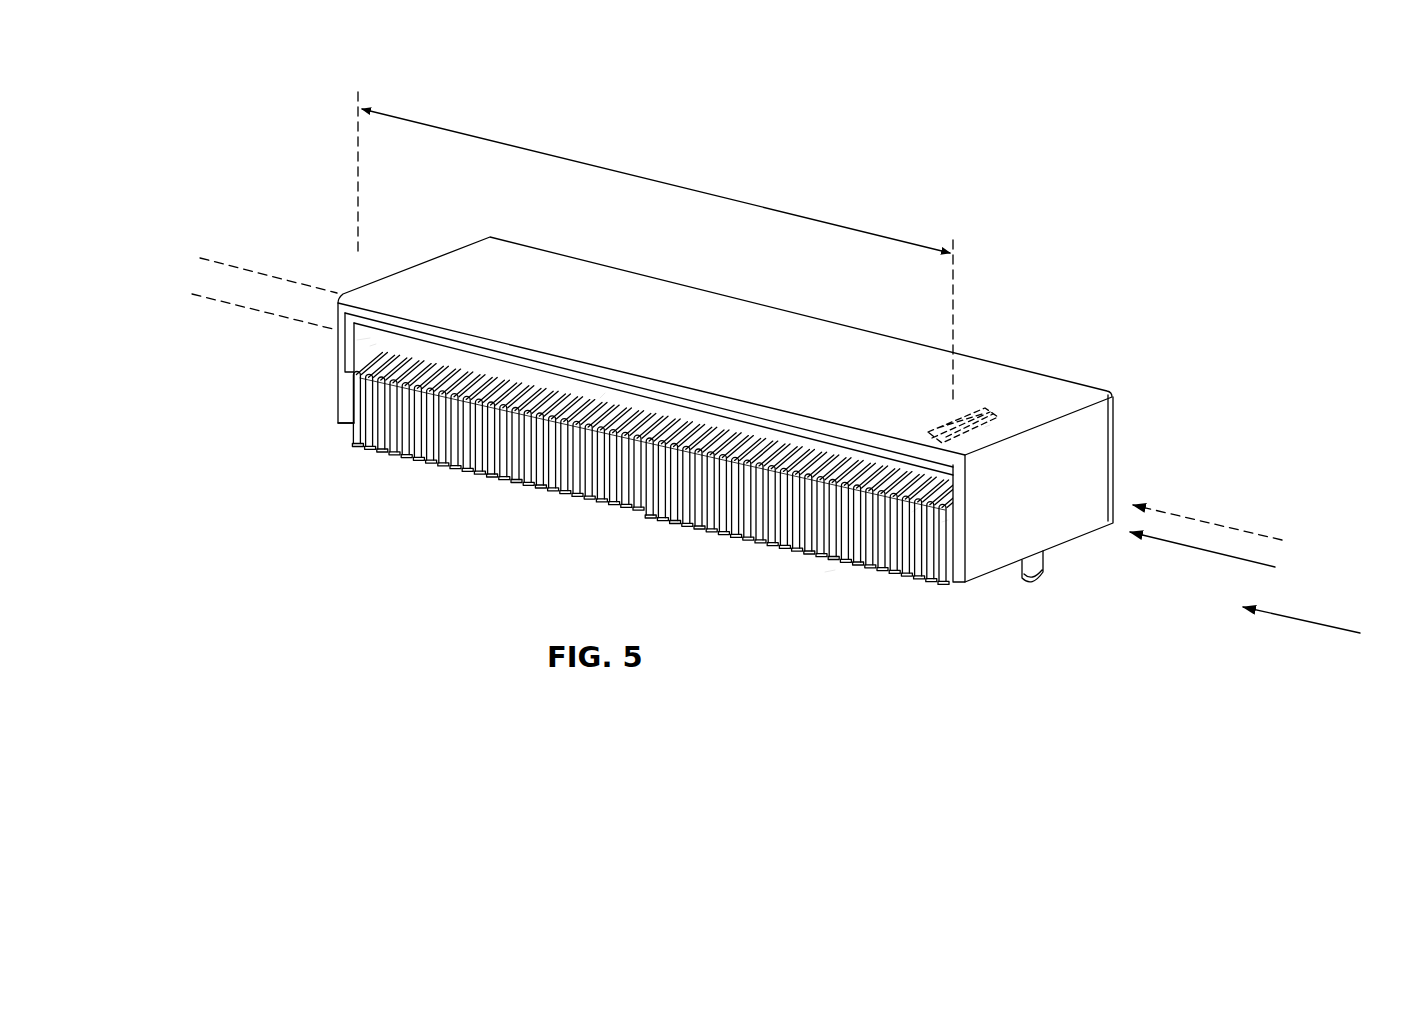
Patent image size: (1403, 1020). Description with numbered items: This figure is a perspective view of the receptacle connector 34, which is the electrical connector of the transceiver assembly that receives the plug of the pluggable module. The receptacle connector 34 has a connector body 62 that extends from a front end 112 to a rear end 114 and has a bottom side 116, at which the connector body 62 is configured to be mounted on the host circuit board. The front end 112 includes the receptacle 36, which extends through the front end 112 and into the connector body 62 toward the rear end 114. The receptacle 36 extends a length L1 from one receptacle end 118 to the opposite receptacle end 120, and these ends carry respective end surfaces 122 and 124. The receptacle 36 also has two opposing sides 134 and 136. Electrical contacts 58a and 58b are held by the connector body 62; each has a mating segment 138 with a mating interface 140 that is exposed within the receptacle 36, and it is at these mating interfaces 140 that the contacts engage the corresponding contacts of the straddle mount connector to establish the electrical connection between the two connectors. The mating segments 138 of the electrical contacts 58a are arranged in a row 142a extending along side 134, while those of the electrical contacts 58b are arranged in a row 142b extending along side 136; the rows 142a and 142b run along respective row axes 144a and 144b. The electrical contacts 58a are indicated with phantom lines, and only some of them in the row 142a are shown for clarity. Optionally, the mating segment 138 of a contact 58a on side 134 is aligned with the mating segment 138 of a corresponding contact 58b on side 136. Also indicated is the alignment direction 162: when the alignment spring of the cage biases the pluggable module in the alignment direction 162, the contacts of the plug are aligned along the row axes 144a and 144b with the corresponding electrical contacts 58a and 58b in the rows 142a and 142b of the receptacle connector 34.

The receptacle connector 34 is at (1082, 122).
The rear end 114 is at (975, 343).
The end 120 is at (320, 313).
The connector body 62 is at (1082, 485).
The bottom side 116 is at (1048, 555).
The side 136 is at (650, 425).
The side 134 is at (610, 393).
The mating segments 138 is at (815, 445).
The mating interfaces 140 is at (963, 440).
The electrical contacts 58a is at (990, 427).
The electrical contacts 58b is at (830, 568).
The end surface 122 is at (915, 510).
The end 118 is at (945, 520).
The receptacle 36 is at (368, 338).
The end surface 124 is at (375, 345).
The front end 112 is at (340, 423).
The row axis 144a is at (205, 258).
The row axis 144b is at (215, 300).
The row 142a is at (1232, 525).
The row 142b is at (1198, 548).
The alignment direction 162 is at (1300, 622).
The length L1 is at (655, 178).